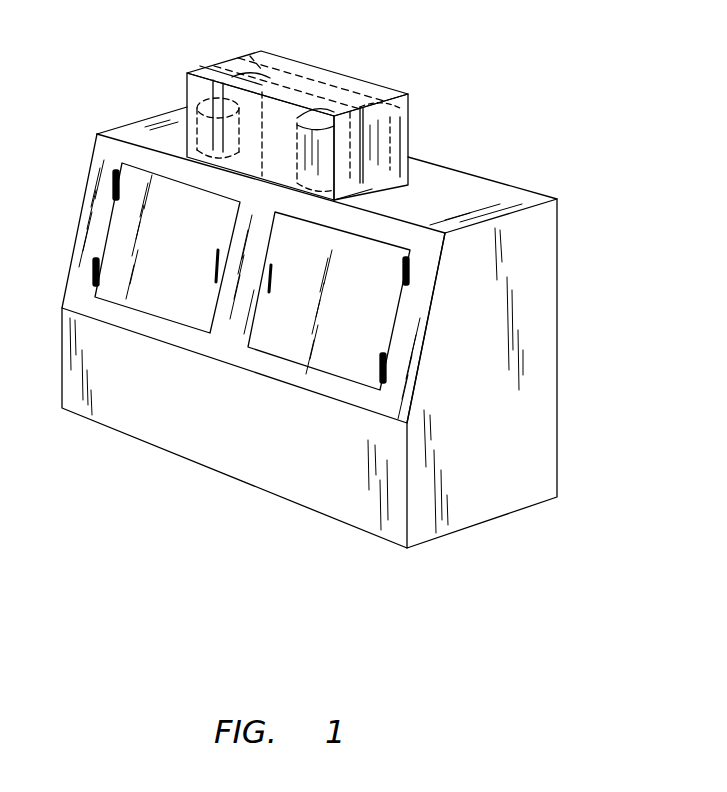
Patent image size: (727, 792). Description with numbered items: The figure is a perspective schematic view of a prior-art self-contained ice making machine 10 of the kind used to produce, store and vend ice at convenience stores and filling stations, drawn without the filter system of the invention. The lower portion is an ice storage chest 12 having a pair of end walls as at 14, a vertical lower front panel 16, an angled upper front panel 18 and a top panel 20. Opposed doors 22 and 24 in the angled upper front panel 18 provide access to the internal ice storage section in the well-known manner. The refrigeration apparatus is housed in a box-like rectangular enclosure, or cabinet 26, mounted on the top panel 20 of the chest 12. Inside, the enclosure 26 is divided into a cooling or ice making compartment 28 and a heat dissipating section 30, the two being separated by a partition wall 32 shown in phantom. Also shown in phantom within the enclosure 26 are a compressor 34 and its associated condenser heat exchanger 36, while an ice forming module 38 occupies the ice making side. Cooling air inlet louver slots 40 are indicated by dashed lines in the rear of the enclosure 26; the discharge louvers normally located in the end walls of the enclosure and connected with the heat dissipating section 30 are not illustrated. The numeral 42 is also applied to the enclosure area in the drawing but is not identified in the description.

The self-contained ice making machine 10 is at (528, 140).
The ice storage chest 12 is at (538, 186).
The end wall 14 is at (545, 414).
The vertical lower front panel 16 is at (267, 478).
The angled upper front panel 18 is at (352, 397).
The top panel 20 is at (134, 134).
The door 22 is at (120, 237).
The door 24 is at (278, 347).
The cabinet (rectangular enclosure) 26 is at (265, 40).
The cooling or ice making compartment 28 is at (373, 188).
The heat dissipating section 30 is at (242, 70).
The partition wall 32 is at (356, 75).
The compressor 34 is at (187, 110).
The condenser heat exchanger 36 is at (393, 133).
The ice forming module 38 is at (328, 98).
The cooling air inlet louver slots 40 is at (295, 70).
The lid 42 is at (206, 62).